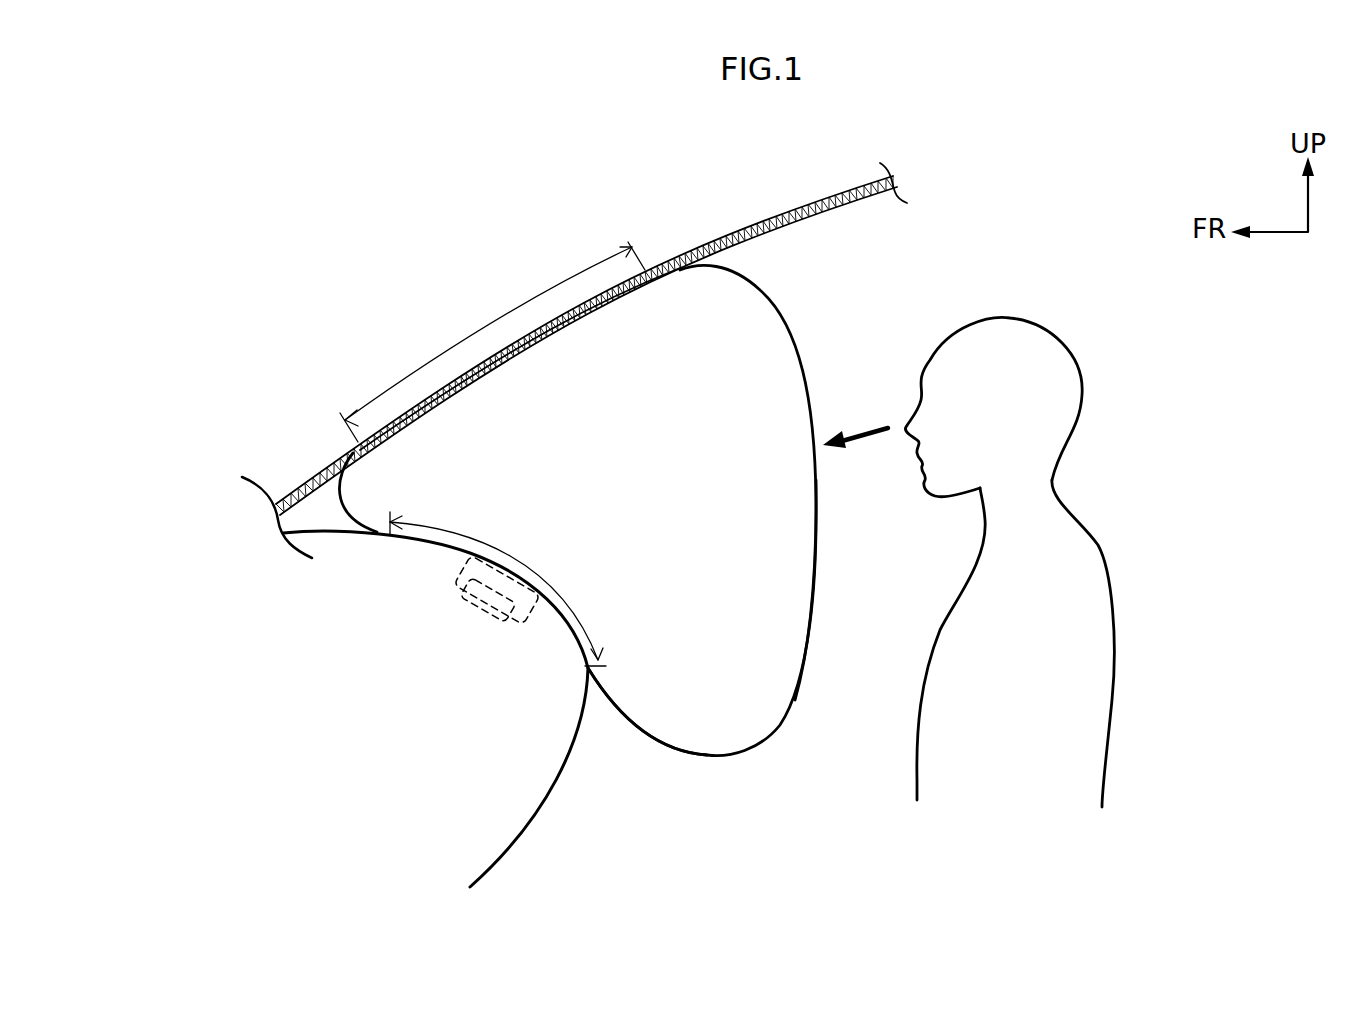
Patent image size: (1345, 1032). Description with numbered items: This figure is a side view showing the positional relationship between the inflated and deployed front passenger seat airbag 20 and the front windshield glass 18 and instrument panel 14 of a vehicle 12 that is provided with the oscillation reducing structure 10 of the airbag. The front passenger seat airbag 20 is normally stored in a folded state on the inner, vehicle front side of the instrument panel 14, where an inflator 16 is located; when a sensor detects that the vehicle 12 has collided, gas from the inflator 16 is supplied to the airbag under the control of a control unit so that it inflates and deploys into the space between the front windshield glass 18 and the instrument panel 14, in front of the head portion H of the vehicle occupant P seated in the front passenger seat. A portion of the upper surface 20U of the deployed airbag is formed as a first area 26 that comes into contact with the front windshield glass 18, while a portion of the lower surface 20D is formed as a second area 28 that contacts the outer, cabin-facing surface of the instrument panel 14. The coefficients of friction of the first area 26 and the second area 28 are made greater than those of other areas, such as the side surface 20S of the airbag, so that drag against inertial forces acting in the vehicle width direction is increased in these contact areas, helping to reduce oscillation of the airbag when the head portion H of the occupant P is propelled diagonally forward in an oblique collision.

The oscillation reducing structure 10 is at (525, 275).
The vehicle 12 is at (357, 300).
The instrument panel 14 is at (533, 823).
The inflator 16 is at (480, 617).
The front windshield glass 18 is at (792, 212).
The front passenger seat airbag 20 is at (790, 318).
The upper surface 20U is at (687, 250).
The side surface 20S is at (786, 592).
The lower surface 20D is at (597, 700).
The first area 26 is at (450, 350).
The second area 28 is at (521, 552).
The head portion H is at (1024, 342).
The vehicle occupant P is at (1046, 522).